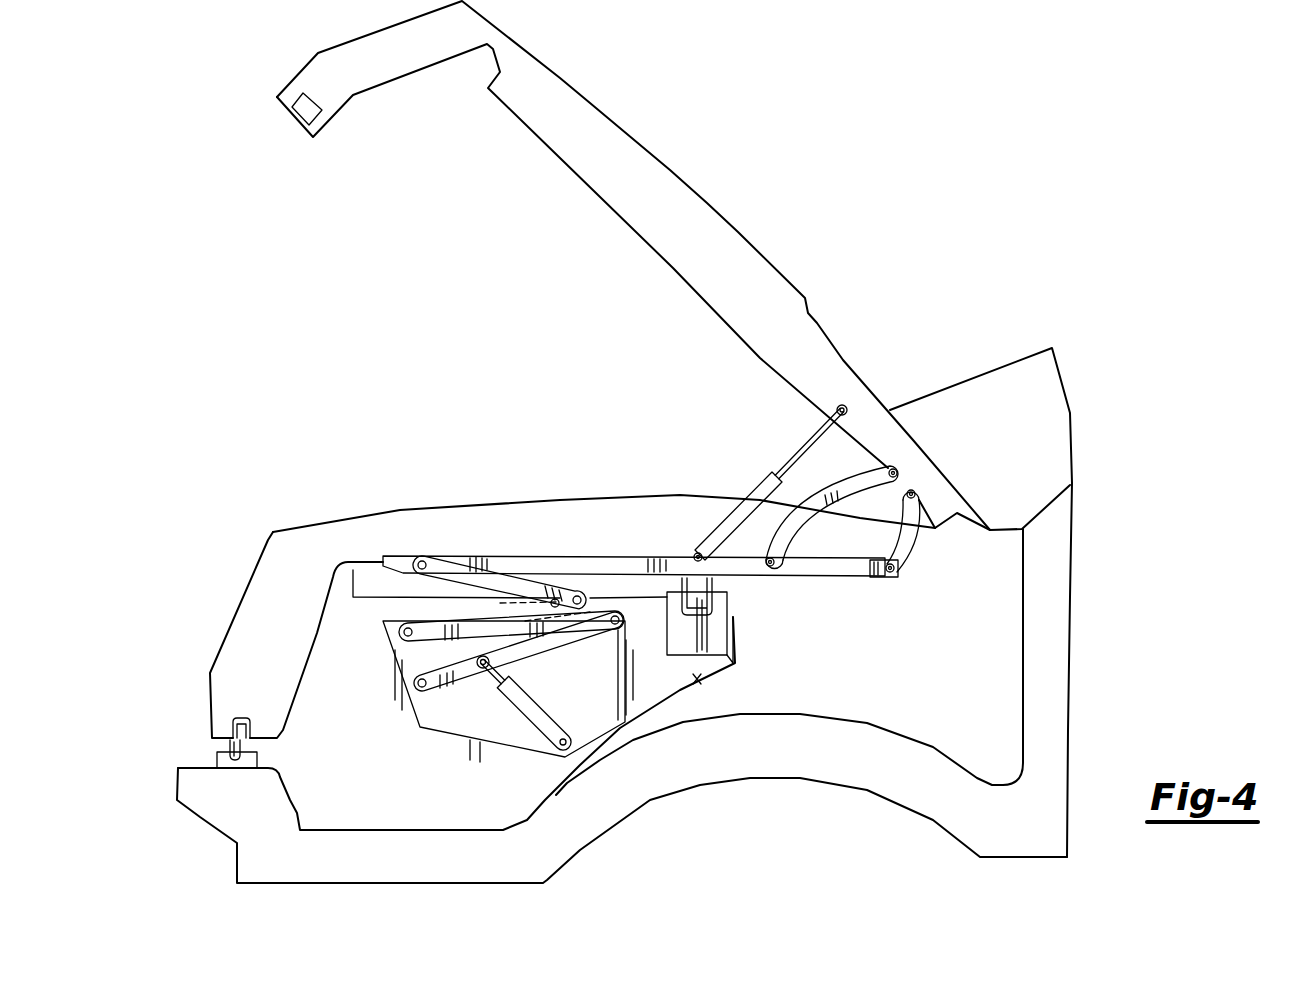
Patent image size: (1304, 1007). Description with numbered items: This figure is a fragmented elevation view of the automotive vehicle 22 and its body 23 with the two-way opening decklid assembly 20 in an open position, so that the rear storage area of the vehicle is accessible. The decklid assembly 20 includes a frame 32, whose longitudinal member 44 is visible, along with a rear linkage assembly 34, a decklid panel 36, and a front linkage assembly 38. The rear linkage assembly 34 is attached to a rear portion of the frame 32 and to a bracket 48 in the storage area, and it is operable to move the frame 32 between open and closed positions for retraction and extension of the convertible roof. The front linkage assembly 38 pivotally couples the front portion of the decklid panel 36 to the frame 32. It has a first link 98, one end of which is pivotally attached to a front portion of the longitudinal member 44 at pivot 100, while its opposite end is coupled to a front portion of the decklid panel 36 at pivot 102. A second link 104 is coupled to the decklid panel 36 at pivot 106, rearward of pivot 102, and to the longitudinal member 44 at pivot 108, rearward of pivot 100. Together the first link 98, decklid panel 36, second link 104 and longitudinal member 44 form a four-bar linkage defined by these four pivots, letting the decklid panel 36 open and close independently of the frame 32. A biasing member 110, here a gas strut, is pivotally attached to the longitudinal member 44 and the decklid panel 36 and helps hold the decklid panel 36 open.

The decklid assembly 20 is at (390, 296).
The automotive vehicle 22 is at (1050, 607).
The body 23 is at (1053, 677).
The frame 32 is at (470, 557).
The rear linkage assembly 34 is at (394, 500).
The decklid panel 36 is at (670, 183).
The front linkage assembly 38 is at (600, 417).
The longitudinal member 44 is at (535, 557).
The bracket 48 is at (692, 677).
The first link 98 is at (912, 537).
The pivot 100 is at (898, 580).
The pivot 102 is at (915, 490).
The second link 104 is at (823, 493).
The pivot 106 is at (897, 468).
The pivot 108 is at (767, 577).
The biasing member 110 is at (712, 533).